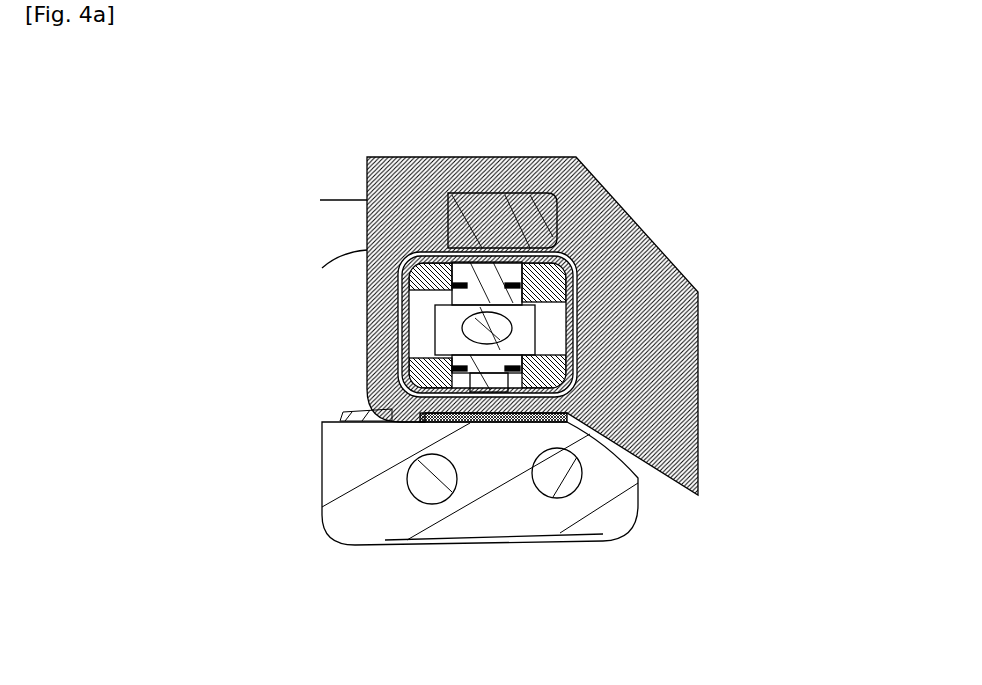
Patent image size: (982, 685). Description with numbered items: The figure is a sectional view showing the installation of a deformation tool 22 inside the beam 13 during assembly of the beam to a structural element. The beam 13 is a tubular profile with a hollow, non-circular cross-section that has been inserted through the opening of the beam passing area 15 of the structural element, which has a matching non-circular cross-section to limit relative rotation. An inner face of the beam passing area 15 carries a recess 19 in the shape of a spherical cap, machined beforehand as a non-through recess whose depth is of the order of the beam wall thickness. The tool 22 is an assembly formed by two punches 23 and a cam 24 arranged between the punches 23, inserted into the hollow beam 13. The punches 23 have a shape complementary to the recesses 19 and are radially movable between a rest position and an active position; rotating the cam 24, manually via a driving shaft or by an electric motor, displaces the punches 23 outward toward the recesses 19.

The beam 13 is at (373, 367).
The beam passing area 15 is at (583, 240).
The recess 19 is at (478, 250).
The deformation tool 22 is at (398, 292).
The punch 23 is at (560, 283).
The cam 24 is at (538, 346).